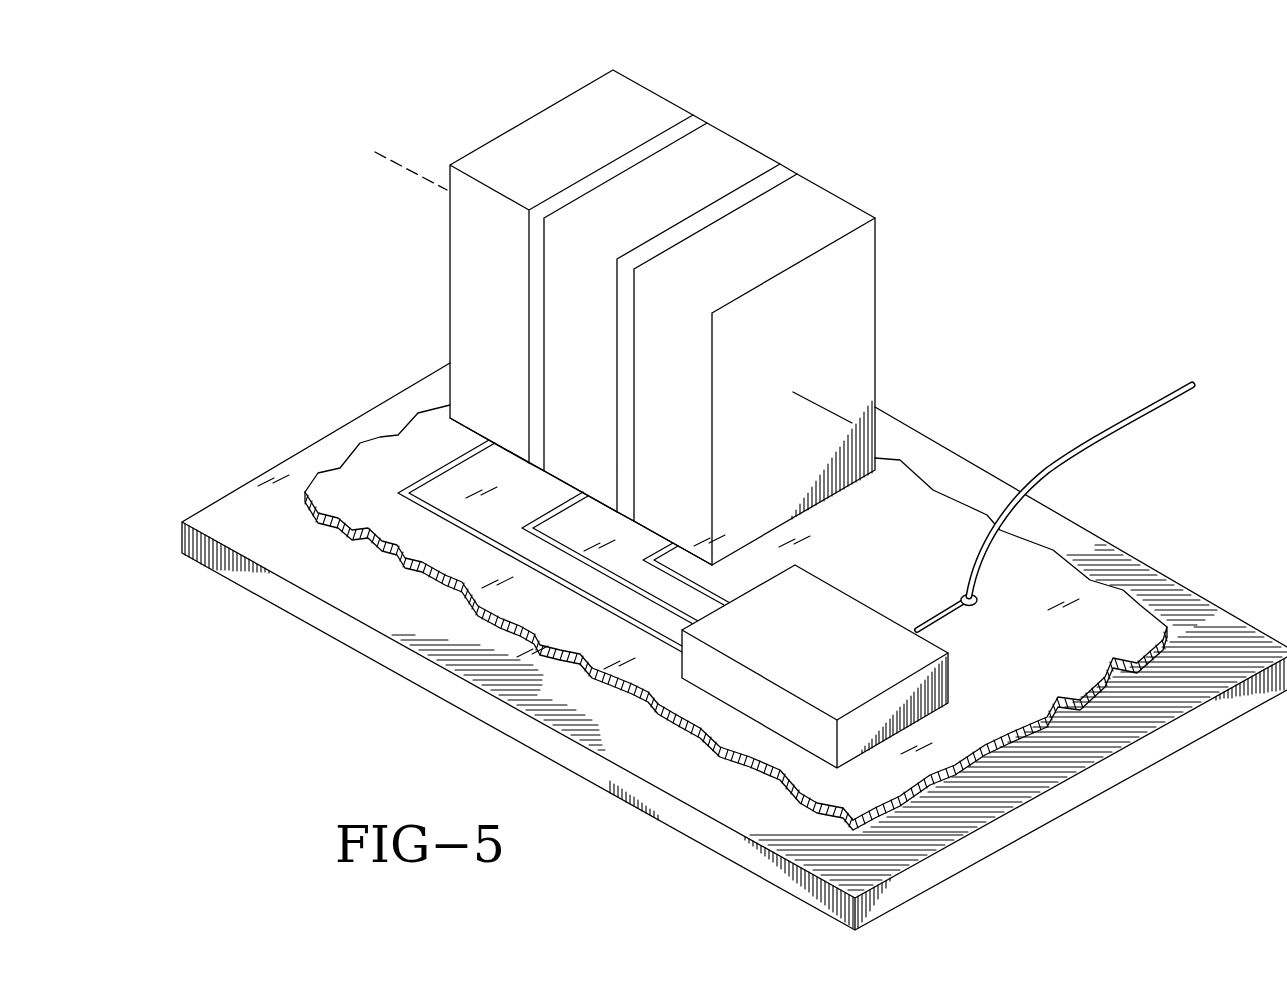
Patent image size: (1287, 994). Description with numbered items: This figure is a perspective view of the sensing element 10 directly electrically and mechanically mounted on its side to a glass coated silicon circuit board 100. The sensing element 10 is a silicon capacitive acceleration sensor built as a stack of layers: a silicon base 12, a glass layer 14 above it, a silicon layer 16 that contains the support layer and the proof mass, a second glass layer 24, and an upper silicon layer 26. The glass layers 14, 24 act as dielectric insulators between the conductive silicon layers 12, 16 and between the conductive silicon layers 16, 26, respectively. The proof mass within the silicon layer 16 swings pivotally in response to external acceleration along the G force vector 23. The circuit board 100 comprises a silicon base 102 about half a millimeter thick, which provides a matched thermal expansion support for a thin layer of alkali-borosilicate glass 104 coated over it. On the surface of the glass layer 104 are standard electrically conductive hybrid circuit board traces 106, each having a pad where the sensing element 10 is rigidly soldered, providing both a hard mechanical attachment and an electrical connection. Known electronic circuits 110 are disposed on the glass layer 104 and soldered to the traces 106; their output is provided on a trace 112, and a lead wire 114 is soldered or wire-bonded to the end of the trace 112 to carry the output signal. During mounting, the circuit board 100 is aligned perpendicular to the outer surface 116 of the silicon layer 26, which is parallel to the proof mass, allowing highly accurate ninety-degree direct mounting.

The sensing element 10 is at (635, 304).
The base 12 is at (624, 108).
The layer of glass 14 is at (692, 120).
The layer of silicon 16 is at (723, 165).
The G force vector 23 is at (388, 152).
The layer of glass 24 is at (782, 173).
The layer of silicon 26 is at (820, 218).
The circuit board 100 is at (722, 486).
The silicon base 102 is at (368, 638).
The layer of glass 104 is at (377, 453).
The hybrid circuit board traces 106 is at (458, 458).
The electronic circuits 110 is at (920, 640).
The trace 112 is at (930, 626).
The lead wire 114 is at (1098, 440).
The outer surface 116 is at (847, 270).